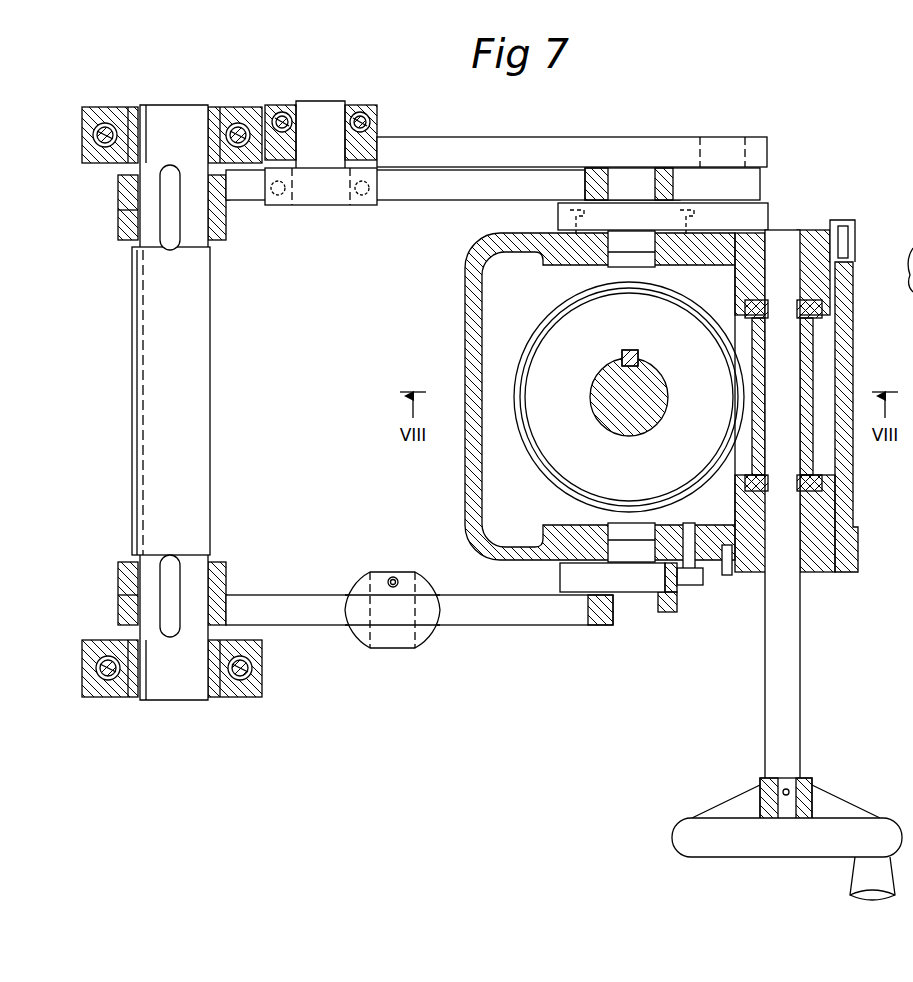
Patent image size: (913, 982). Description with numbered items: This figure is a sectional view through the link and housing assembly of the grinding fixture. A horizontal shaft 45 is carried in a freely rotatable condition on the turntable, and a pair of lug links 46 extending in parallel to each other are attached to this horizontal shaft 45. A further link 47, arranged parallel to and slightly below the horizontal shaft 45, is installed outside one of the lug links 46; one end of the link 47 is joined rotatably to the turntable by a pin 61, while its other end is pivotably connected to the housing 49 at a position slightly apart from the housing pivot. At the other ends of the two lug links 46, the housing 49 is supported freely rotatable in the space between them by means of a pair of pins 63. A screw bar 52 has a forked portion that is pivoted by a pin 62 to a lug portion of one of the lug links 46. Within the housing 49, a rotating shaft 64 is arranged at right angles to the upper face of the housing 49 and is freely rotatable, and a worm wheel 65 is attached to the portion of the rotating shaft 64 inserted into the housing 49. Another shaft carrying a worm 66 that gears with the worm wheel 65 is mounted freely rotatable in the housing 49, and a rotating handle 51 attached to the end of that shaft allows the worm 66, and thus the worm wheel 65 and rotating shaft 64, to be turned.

The horizontal shaft 45 is at (210, 380).
The lug links 46 is at (425, 203).
The link 47 is at (598, 137).
The housing 49 is at (465, 340).
The rotating handle 51 is at (686, 818).
The screw bar 52 is at (360, 650).
The pin 61 is at (331, 107).
The pin 62 is at (380, 568).
The pins 63 is at (640, 178).
The rotating shaft 64 is at (607, 420).
The worm wheel 65 is at (527, 458).
The worm 66 is at (826, 374).